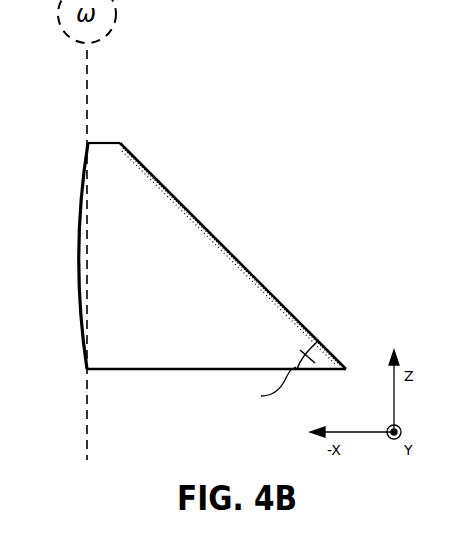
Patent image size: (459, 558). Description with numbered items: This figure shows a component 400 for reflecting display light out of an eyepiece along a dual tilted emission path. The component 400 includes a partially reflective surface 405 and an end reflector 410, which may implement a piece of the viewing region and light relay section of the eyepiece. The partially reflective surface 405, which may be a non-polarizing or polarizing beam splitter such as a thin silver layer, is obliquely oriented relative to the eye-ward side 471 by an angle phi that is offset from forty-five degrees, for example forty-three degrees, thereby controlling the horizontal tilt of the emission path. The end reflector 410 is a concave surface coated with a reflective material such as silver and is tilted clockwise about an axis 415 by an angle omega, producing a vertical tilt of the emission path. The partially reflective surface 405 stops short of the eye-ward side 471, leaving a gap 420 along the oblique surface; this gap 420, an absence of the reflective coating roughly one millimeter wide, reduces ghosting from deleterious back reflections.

The component 400 is at (226, 104).
The partially reflective surface 405 is at (248, 272).
The end reflector 410 is at (80, 255).
The axis 415 is at (89, 100).
The gap 420 is at (337, 361).
The eye-ward side 471 is at (185, 371).